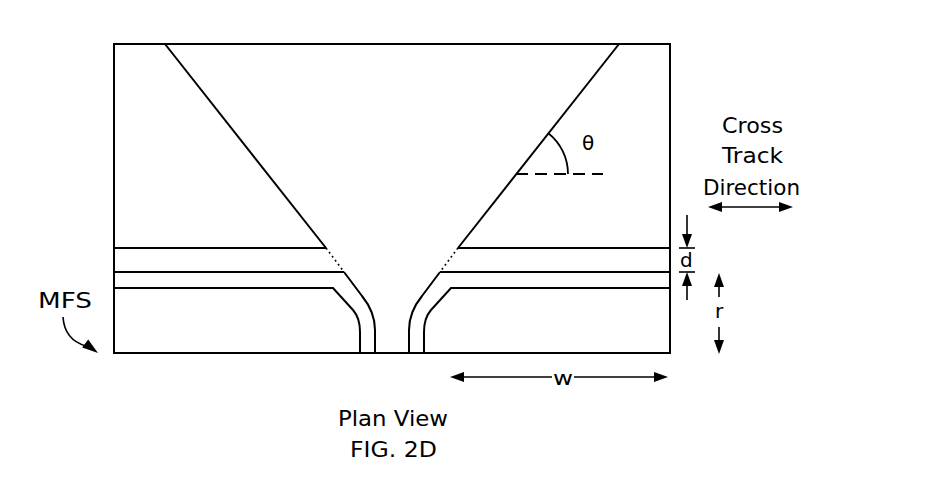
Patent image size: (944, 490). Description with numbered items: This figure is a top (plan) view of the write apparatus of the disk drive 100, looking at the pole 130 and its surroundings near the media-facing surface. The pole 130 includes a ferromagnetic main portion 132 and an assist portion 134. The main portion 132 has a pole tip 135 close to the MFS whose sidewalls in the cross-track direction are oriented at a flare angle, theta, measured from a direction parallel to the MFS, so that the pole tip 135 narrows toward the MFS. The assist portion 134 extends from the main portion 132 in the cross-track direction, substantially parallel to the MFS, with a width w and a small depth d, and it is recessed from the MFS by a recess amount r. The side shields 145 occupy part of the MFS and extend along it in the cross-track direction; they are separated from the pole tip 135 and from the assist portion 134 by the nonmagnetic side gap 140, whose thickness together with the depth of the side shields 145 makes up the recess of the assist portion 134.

The disk drive 100 is at (413, 30).
The pole 130 is at (214, 141).
The main portion 132 is at (392, 130).
The assist portion 134 is at (392, 259).
The pole tip 135 is at (280, 232).
The side gap 140 is at (417, 352).
The side shields 145 is at (392, 320).